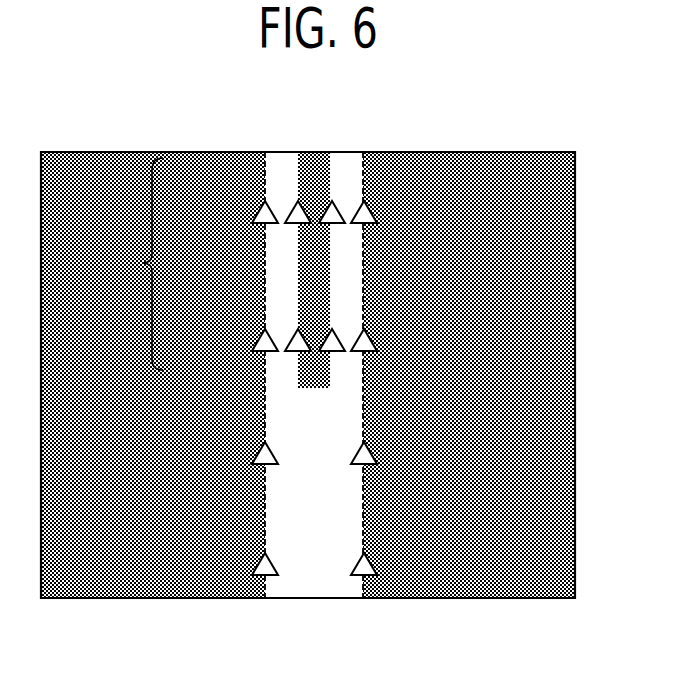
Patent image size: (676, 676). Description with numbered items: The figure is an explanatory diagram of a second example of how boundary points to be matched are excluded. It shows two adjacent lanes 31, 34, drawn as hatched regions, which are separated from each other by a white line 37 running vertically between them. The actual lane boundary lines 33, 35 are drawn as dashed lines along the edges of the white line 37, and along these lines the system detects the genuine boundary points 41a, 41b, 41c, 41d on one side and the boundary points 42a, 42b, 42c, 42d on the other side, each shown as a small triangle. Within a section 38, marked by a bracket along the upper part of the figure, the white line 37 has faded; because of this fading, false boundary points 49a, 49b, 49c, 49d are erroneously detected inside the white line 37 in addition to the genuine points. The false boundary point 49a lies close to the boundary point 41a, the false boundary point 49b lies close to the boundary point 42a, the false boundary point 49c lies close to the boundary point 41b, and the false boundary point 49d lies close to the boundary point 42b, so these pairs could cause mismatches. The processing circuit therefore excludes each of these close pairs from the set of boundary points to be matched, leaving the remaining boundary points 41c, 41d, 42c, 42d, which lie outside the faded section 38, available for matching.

The lane 31 is at (124, 178).
The lane boundary line 33 is at (265, 172).
The lane 34 is at (512, 178).
The lane boundary line 35 is at (363, 172).
The white line 37 is at (318, 580).
The section 38 is at (134, 264).
The boundary point 41a is at (256, 214).
The boundary point 41b is at (256, 341).
The boundary point 41c is at (256, 454).
The boundary point 41d is at (256, 564).
The boundary point 42a is at (373, 214).
The boundary point 42b is at (373, 341).
The boundary point 42c is at (373, 454).
The boundary point 42d is at (373, 564).
The false boundary point 49a is at (295, 204).
The false boundary point 49b is at (335, 204).
The false boundary point 49c is at (295, 331).
The false boundary point 49d is at (335, 331).